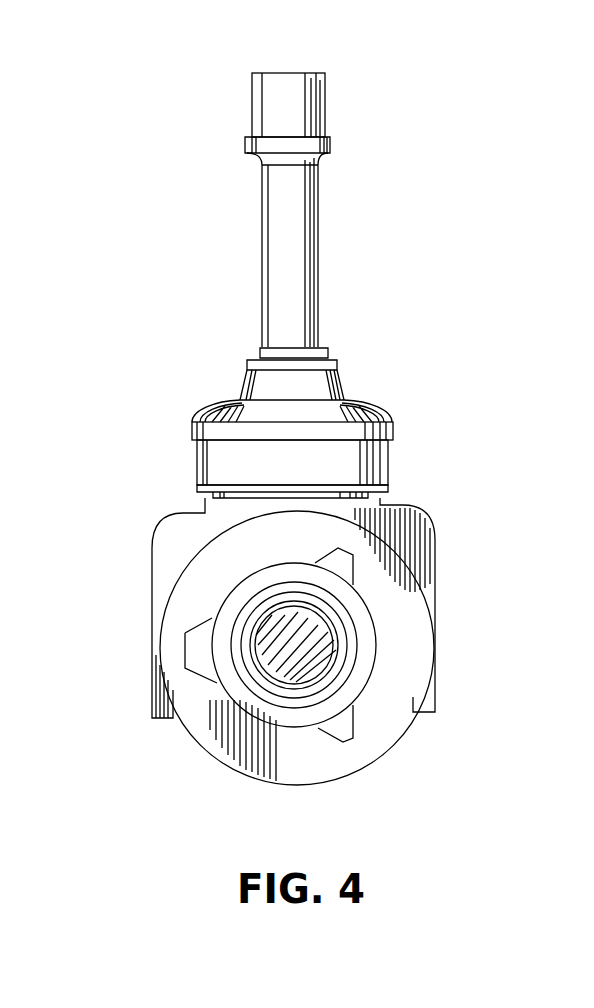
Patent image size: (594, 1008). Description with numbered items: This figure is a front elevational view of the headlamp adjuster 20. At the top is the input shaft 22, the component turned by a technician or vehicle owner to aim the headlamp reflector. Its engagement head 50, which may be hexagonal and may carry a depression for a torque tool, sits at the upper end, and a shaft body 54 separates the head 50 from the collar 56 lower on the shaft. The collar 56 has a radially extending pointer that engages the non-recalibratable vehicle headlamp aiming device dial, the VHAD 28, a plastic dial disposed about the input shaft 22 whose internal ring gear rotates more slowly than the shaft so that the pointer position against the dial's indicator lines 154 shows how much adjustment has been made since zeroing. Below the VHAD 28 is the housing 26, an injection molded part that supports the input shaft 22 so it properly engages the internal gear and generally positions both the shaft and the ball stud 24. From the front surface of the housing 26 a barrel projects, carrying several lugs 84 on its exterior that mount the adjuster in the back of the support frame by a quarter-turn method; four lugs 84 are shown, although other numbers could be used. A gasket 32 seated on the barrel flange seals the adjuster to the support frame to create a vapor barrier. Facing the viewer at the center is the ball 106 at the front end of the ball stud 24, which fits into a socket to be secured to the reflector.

The adjuster 20 is at (395, 152).
The input shaft 22 is at (212, 236).
The ball stud 24 is at (343, 667).
The housing 26 is at (440, 555).
The non-recalibratable vehicle headlamp aiming device dial (VHAD) 28 is at (370, 461).
The gasket 32 is at (175, 615).
The engagement head 50 is at (252, 121).
The shaft body 54 is at (320, 226).
The collar 56 is at (320, 378).
The lugs 84 is at (205, 663).
The ball 106 is at (323, 653).
The indicator lines 154 is at (385, 405).